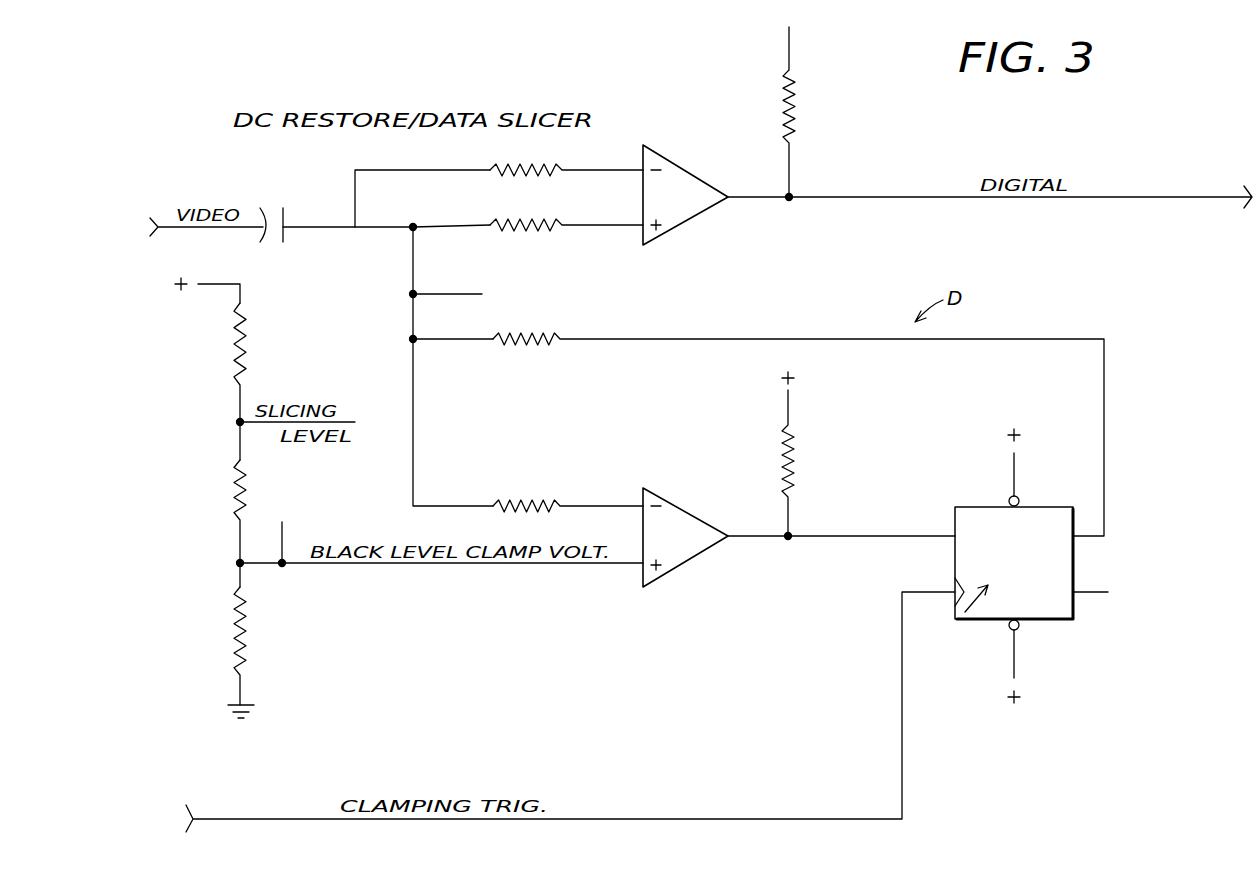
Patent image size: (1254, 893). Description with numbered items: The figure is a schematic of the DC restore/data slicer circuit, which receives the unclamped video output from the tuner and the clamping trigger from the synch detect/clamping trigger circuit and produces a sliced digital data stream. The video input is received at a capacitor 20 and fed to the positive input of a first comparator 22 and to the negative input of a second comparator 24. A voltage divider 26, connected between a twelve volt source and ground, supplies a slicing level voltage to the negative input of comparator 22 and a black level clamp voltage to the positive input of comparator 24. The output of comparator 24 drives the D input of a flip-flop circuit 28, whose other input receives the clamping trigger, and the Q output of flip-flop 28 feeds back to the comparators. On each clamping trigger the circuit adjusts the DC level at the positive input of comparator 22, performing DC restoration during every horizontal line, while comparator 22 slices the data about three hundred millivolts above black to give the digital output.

The capacitor 20 is at (302, 193).
The first comparator 22 is at (688, 222).
The second comparator 24 is at (688, 562).
The voltage divider 26 is at (213, 435).
The flip-flop circuit 28 is at (1073, 620).